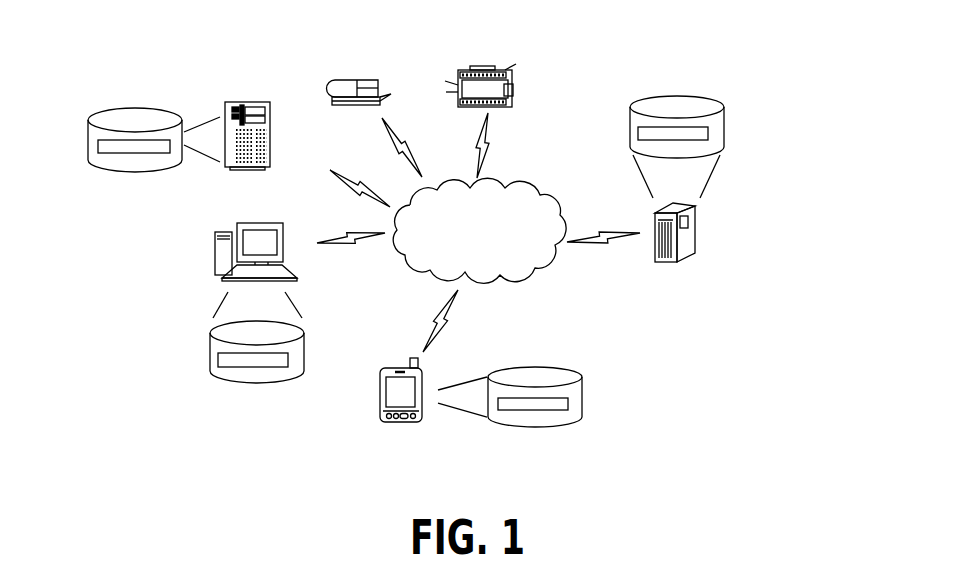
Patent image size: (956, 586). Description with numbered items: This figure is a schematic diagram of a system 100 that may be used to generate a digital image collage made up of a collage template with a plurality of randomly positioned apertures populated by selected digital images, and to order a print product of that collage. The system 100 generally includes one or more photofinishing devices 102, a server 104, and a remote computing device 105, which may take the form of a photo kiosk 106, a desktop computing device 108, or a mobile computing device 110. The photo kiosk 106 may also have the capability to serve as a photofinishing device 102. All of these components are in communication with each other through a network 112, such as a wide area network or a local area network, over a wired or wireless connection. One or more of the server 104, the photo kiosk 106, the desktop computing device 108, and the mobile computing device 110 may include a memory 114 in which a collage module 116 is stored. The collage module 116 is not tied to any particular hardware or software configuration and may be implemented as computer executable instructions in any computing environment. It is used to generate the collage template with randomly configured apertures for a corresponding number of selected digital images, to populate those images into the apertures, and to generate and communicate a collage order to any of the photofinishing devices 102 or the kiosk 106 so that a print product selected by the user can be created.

The system 100 is at (632, 35).
The photofinishing device 102 is at (347, 80).
The server 104 is at (245, 102).
The remote computing device 105 is at (284, 240).
The photo kiosk 106 is at (682, 260).
The desktop computing device 108 is at (215, 250).
The mobile computing device 110 is at (400, 423).
The network 112 is at (520, 273).
The memory 114 is at (132, 108).
The collage module 116 is at (135, 153).